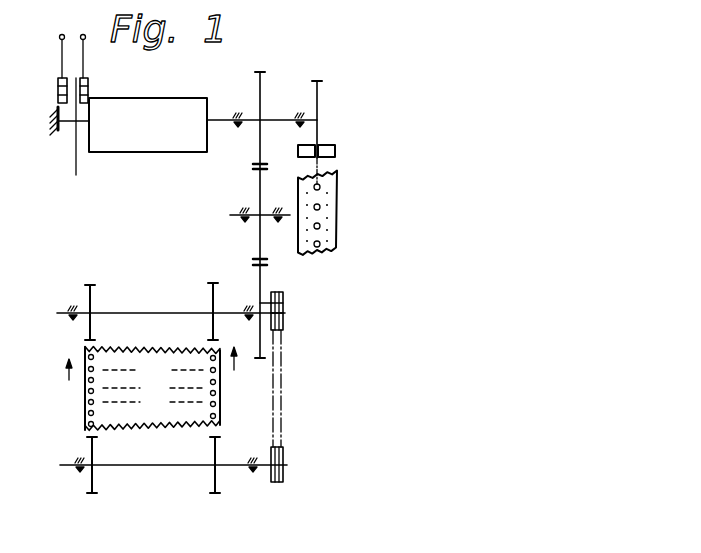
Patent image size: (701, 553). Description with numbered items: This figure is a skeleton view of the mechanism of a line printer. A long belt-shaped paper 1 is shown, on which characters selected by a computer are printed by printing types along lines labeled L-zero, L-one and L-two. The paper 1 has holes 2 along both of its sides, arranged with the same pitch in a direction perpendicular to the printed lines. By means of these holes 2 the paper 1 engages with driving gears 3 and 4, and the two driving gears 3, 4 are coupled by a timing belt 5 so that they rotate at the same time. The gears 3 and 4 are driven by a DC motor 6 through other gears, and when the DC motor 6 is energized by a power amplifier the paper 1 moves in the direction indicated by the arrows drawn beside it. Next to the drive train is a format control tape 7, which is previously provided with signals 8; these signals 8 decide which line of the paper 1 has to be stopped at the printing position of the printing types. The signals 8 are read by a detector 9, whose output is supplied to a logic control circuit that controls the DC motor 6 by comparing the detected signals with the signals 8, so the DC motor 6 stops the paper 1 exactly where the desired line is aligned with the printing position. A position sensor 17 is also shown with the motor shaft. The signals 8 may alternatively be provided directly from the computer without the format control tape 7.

The paper 1 is at (185, 418).
The holes 2 is at (86, 410).
The driving gear 3 is at (92, 300).
The driving gear 4 is at (94, 483).
The timing belt 5 is at (283, 385).
The DC motor 6 is at (139, 148).
The format control tape 7 is at (339, 187).
The signals 8 is at (300, 188).
The detector 9 is at (331, 143).
The position sensor 17 is at (58, 84).